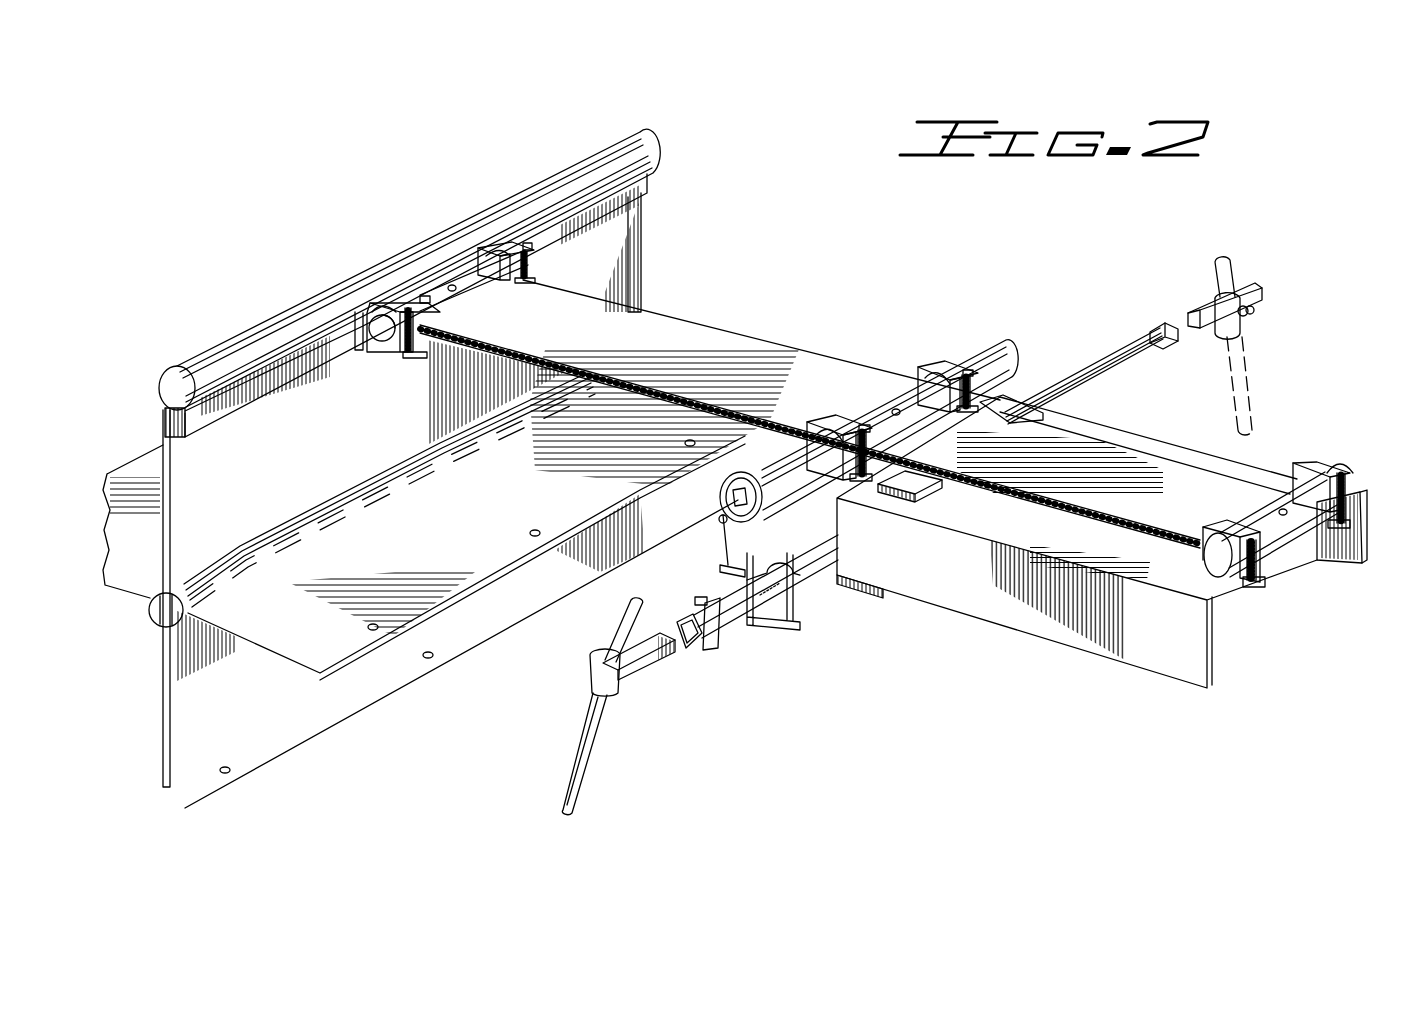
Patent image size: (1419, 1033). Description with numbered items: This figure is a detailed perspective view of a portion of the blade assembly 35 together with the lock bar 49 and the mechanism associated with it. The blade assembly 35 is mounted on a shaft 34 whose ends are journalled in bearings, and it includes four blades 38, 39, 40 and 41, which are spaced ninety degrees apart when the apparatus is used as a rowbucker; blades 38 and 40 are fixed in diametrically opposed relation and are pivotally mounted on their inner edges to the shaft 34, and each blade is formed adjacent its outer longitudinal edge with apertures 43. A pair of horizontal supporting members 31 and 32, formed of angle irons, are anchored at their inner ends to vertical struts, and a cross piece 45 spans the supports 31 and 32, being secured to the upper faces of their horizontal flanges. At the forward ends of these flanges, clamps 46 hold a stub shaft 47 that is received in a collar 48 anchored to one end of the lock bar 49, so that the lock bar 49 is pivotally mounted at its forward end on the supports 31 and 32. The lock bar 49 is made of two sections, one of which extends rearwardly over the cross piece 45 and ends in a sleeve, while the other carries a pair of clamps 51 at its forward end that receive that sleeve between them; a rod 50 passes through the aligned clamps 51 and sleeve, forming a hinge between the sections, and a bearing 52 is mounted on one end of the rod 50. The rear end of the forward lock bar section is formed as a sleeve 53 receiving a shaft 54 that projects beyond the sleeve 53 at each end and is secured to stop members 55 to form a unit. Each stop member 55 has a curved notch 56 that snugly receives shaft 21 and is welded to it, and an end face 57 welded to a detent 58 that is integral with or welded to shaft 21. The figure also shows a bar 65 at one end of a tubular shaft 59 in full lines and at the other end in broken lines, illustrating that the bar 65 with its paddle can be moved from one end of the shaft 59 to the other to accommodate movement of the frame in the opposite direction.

The shaft 21 is at (176, 366).
The horizontal supporting member 31 is at (1213, 610).
The horizontal supporting member 32 is at (1364, 503).
The shaft 34 is at (160, 624).
The blade assembly 35 is at (682, 238).
The blade 38 is at (123, 514).
The blade 39 is at (216, 514).
The blade 40 is at (273, 626).
The blade 41 is at (223, 706).
The apertures 43 is at (433, 656).
The cross piece 45 is at (927, 483).
The clamps 46 is at (1305, 463).
The stub shaft 47 is at (1208, 560).
The collar 48 is at (1278, 545).
The lock bar 49 is at (1205, 472).
The rod 50 is at (988, 348).
The clamps 51 is at (828, 422).
The bearing 52 is at (719, 497).
The sleeve 53 is at (492, 272).
The shaft 54 is at (384, 341).
The stop members 55 is at (368, 350).
The curved notch 56 is at (378, 312).
The end face 57 is at (348, 338).
The detent 58 is at (260, 388).
The tubular shaft 59 is at (1118, 352).
The bar 65 is at (598, 715).